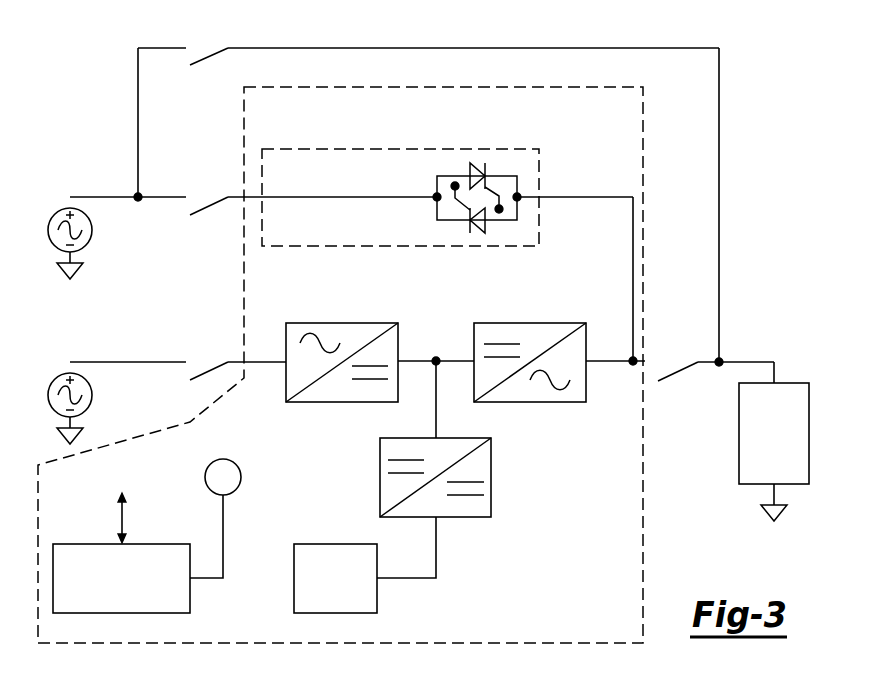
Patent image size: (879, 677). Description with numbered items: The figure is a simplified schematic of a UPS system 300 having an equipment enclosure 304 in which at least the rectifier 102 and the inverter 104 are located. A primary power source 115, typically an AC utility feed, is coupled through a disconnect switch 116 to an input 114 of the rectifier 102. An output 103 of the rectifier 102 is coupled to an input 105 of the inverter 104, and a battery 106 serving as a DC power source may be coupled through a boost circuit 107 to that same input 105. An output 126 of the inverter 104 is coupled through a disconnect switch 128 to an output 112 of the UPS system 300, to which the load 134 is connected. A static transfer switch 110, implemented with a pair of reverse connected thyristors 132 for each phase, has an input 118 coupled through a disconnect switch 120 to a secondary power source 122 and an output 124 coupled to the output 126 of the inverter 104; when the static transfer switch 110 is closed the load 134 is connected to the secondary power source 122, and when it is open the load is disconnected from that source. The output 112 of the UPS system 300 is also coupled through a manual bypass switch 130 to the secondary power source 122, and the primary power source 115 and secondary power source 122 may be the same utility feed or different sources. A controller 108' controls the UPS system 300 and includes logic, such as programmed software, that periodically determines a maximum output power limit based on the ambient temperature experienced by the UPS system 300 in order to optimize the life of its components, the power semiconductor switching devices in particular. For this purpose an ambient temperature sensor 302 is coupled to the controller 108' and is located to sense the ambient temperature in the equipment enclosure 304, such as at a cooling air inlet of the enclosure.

The UPS system 300 is at (748, 70).
The equipment enclosure 304 is at (643, 142).
The static transfer switch 110 is at (539, 150).
The thyristors 132 is at (481, 163).
The output of static transfer switch 124 is at (540, 197).
The input of static transfer switch 118 is at (261, 200).
The secondary power source 122 is at (93, 231).
The disconnect switch 120 is at (207, 222).
The manual bypass switch 130 is at (219, 66).
The primary power source 115 is at (93, 396).
The disconnect switch 116 is at (203, 384).
The input of rectifier 114 is at (284, 363).
The rectifier 102 is at (305, 403).
The output of rectifier 103 is at (400, 360).
The input of inverter 105 is at (472, 362).
The inverter 104 is at (565, 403).
The output of inverter 126 is at (590, 360).
The disconnect switch 128 is at (686, 385).
The output of UPS system 112 is at (722, 360).
The load 134 is at (738, 476).
The boost circuit 107 is at (491, 500).
The battery 106 is at (314, 543).
The controller 108' is at (138, 553).
The ambient temperature sensor 302 is at (241, 477).